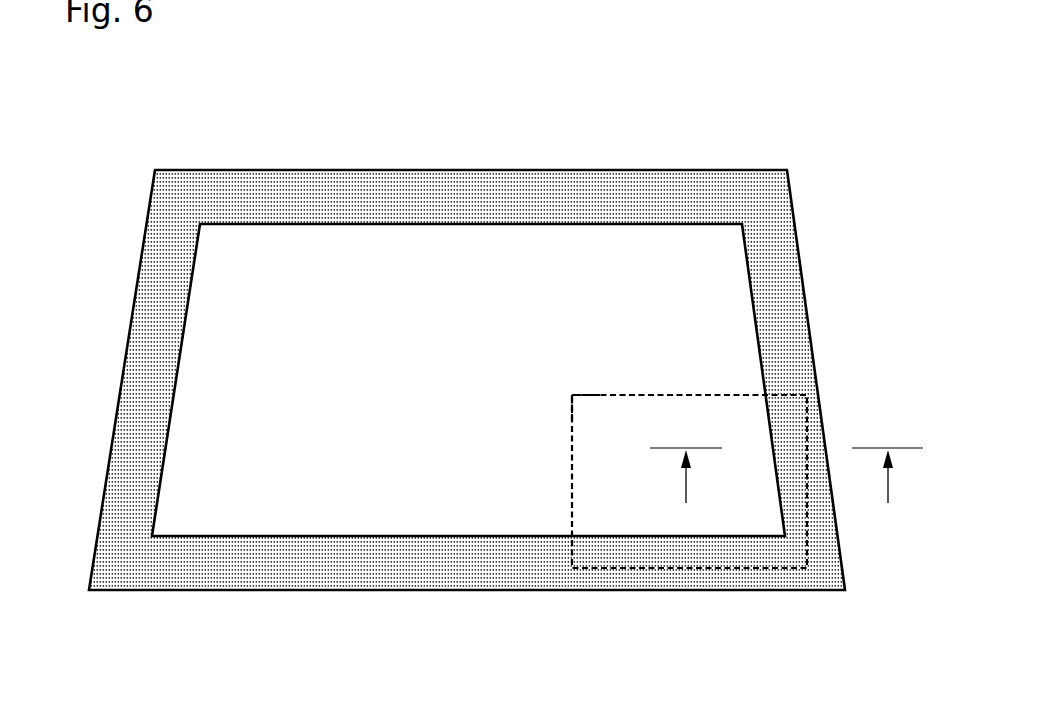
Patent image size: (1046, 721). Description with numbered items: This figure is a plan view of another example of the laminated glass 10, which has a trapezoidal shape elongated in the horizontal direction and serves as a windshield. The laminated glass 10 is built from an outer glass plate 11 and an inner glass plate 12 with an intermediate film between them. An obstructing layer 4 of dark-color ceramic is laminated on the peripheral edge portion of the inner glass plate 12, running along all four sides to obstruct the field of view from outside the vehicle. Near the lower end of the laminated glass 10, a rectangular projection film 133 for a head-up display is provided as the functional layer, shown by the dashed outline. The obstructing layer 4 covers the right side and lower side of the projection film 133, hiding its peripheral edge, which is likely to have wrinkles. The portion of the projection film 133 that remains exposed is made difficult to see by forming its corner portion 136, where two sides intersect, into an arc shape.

The laminated glass 10 is at (464, 372).
The obstructing layer 4 is at (620, 178).
The outer glass plate 11 is at (213, 385).
The inner glass plate 12 is at (395, 380).
The projection film 133 is at (808, 533).
The corner portion 136 is at (573, 395).